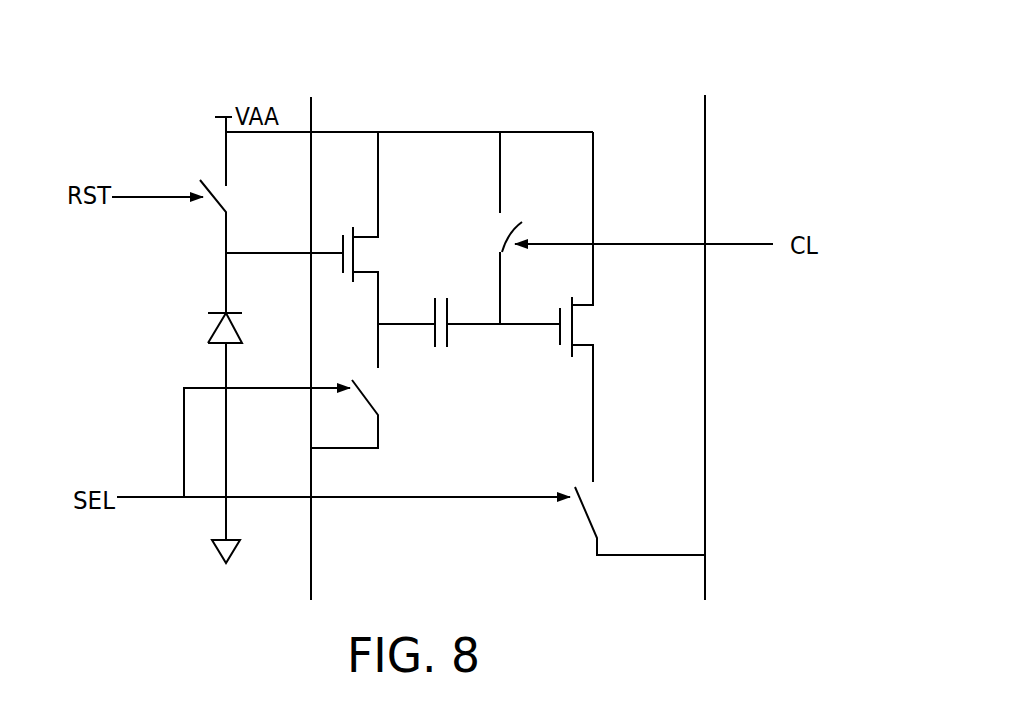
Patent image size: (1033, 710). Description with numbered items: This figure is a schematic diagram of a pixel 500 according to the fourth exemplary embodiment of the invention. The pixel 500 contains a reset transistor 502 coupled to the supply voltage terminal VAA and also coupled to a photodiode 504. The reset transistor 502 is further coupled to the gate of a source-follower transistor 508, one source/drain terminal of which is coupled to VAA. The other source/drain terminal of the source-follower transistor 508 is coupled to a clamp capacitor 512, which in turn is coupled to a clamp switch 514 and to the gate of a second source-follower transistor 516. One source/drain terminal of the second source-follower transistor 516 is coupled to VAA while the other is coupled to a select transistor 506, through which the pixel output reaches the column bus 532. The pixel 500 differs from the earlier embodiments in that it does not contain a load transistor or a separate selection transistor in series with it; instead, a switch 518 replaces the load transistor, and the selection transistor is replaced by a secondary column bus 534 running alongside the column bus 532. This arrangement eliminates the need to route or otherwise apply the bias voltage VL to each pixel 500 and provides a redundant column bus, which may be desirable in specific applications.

The pixel 500 is at (490, 70).
The reset transistor 502 is at (240, 193).
The photodiode 504 is at (210, 326).
The select transistor 506 is at (607, 495).
The source-follower transistor 508 is at (392, 232).
The clamp capacitor 512 is at (437, 297).
The clamp switch 514 is at (505, 218).
The second source-follower transistor 516 is at (607, 308).
The switch 518 is at (392, 410).
The column bus 532 is at (708, 190).
The secondary column bus 534 is at (313, 127).